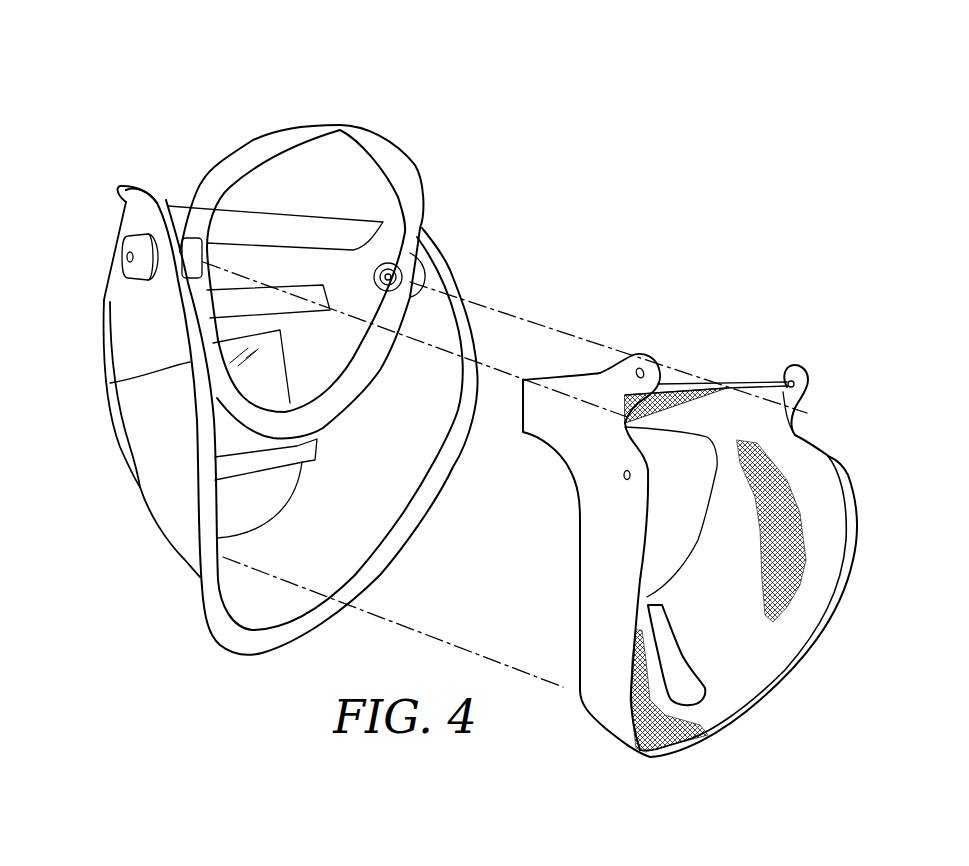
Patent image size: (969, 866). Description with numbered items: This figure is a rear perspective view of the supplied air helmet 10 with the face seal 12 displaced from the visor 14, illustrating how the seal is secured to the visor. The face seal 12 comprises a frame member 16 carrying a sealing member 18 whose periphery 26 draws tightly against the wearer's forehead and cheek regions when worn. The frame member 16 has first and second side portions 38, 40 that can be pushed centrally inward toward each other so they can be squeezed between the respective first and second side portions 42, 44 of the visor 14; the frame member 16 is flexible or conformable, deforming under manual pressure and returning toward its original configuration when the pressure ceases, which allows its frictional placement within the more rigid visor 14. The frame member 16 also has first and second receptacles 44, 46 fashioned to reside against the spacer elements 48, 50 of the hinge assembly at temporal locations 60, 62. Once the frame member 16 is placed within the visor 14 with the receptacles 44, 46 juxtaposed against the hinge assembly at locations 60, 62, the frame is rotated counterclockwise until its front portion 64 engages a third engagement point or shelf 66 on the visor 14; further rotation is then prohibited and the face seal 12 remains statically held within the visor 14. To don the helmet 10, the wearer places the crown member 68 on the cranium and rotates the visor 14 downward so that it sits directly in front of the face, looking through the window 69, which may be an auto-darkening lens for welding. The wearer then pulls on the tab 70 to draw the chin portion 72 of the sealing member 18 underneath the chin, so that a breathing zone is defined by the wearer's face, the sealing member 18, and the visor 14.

The supplied air helmet 10 is at (238, 106).
The face seal 12 is at (852, 458).
The visor 14 is at (471, 286).
The frame member 16 is at (592, 540).
The sealing member 18 is at (704, 590).
The sealing member periphery 26 is at (703, 507).
The first side portion 38 is at (597, 610).
The second side portion 40 is at (820, 633).
The first side portion of visor 42 is at (110, 383).
The second side portion of visor 44 is at (630, 393).
The second receptacle 46 is at (800, 438).
The spacer element 48 is at (175, 236).
The spacer element 50 is at (413, 267).
The temporal location 60 is at (182, 283).
The temporal location 62 is at (431, 277).
The front portion 64 is at (530, 380).
The shelf 66 is at (277, 283).
The crown member 68 is at (297, 137).
The window 69 is at (247, 386).
The tab 70 is at (687, 693).
The chin portion 72 is at (700, 630).